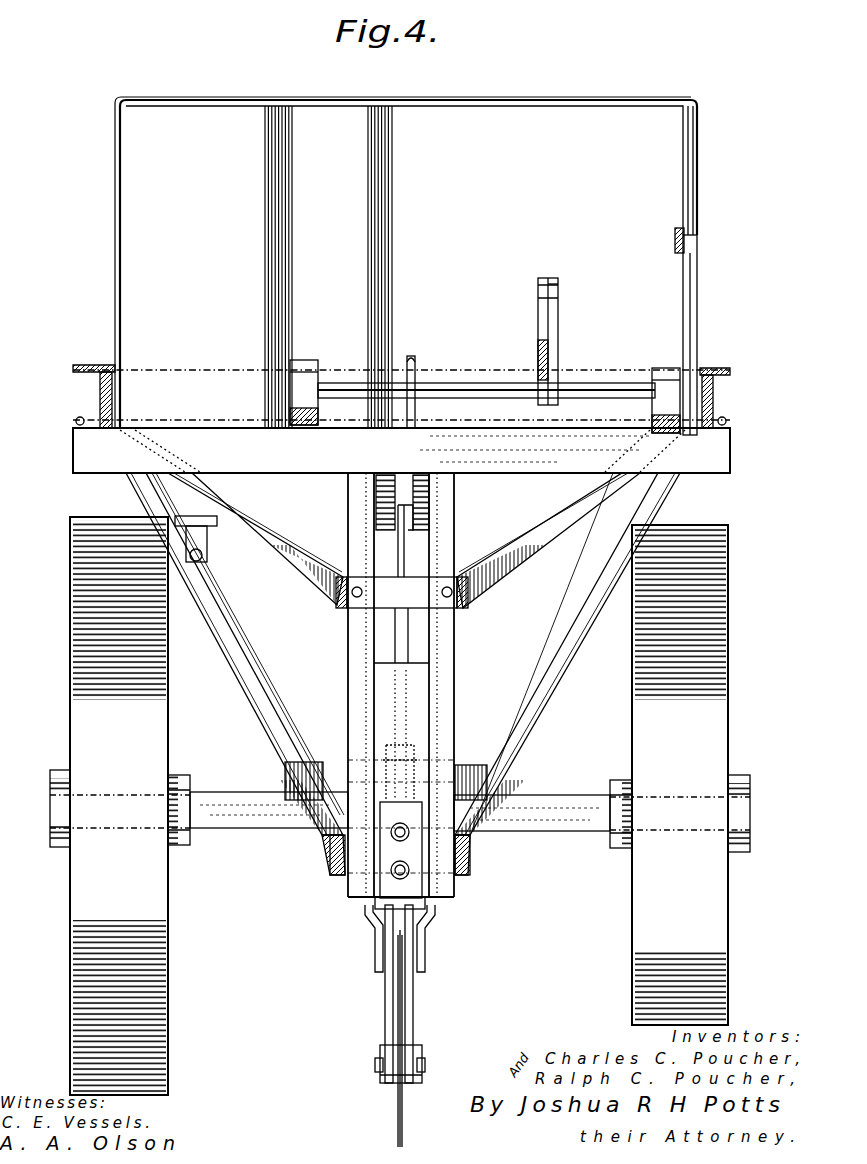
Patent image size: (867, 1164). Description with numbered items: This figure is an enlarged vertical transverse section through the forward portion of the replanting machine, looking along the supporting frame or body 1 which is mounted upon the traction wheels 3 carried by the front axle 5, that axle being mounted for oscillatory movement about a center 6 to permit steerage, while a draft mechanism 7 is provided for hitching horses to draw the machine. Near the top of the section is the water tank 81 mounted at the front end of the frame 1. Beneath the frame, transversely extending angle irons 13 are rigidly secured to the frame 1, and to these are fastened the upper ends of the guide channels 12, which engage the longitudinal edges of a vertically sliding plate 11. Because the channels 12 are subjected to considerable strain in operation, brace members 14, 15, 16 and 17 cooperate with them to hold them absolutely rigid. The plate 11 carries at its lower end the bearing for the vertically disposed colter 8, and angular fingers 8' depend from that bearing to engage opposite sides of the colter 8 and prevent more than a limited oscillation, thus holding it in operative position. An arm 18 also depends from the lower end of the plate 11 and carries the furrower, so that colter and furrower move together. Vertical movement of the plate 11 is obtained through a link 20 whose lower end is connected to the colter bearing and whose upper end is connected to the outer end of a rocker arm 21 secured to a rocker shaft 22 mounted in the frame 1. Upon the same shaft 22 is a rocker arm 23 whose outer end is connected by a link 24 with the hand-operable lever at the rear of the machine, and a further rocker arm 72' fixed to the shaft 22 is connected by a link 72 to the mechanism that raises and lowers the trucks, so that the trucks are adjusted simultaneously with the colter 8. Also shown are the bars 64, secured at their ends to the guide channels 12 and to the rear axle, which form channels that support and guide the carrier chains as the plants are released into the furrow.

The water tank 81 is at (452, 120).
The link 24 is at (675, 243).
The rocker arm 23 is at (697, 275).
The link 72 is at (530, 341).
The rocker arm 72' is at (572, 309).
The rocker shaft 22 is at (478, 383).
The rocker arm 21 is at (420, 385).
The supporting frame 1 is at (86, 365).
The angle irons 13 is at (480, 440).
The guide channels 12 is at (348, 492).
The plate 11 is at (415, 686).
The link 20 is at (412, 535).
The brace member 16 is at (285, 568).
The brace member 14 is at (280, 552).
The brace member 15 is at (262, 725).
The brace member 17 is at (275, 708).
The traction wheels 3 is at (400, 806).
The front axle 5 is at (568, 832).
The center 6 is at (408, 760).
The bars 64 is at (335, 875).
The arm 18 is at (430, 905).
The draft mechanism 7 is at (385, 992).
The colter 8 is at (406, 1038).
The angular fingers 8' is at (400, 938).